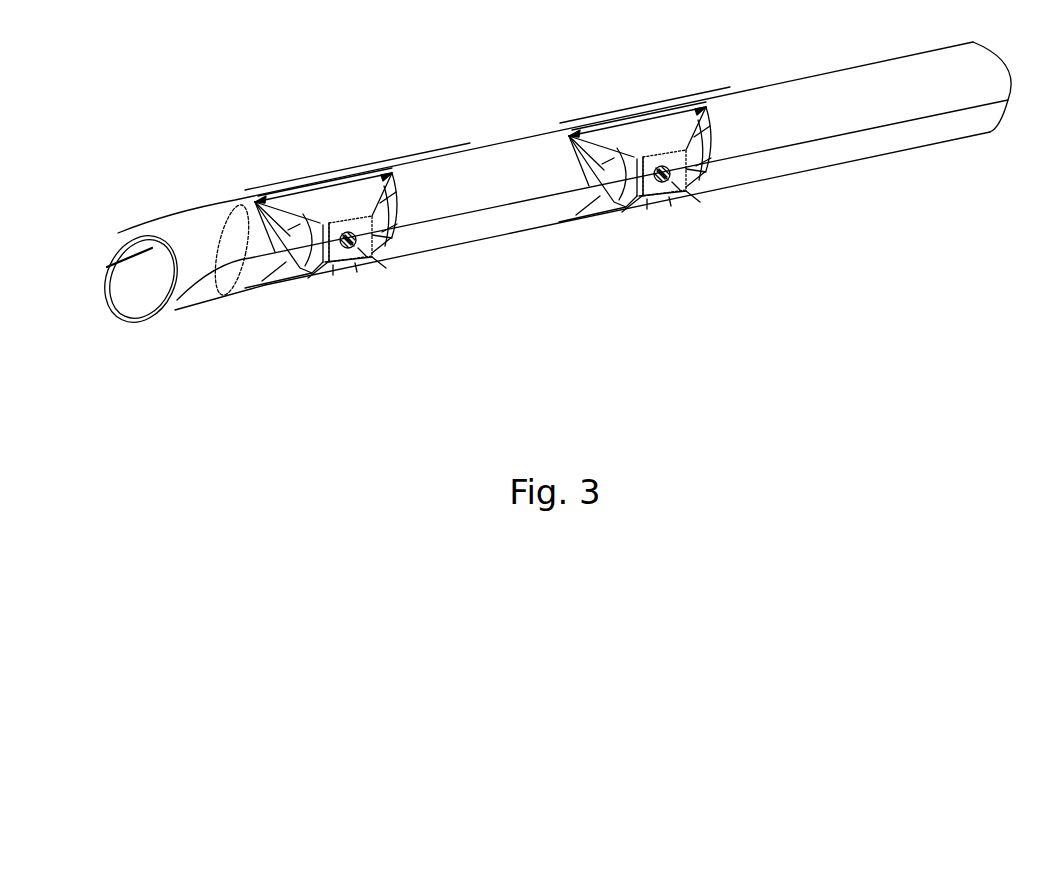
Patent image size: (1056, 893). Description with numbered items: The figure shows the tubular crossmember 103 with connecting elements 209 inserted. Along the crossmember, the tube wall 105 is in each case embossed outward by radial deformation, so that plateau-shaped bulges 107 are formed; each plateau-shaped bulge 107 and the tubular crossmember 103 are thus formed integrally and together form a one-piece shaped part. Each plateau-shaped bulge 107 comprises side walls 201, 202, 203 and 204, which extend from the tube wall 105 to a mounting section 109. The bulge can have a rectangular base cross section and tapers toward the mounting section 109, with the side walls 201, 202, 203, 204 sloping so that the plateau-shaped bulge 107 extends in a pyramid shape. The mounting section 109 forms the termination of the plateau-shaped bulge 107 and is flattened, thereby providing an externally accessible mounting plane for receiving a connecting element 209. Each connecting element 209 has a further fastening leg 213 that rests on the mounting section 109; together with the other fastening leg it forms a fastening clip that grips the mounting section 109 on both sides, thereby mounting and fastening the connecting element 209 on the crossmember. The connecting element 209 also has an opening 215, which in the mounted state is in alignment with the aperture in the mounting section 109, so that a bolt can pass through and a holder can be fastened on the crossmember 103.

The tubular crossmember 103 is at (972, 125).
The tube wall 105 is at (465, 173).
The plateau-shaped bulge 107 is at (252, 300).
The mounting section 109 is at (348, 243).
The side wall 201 is at (297, 200).
The side wall 202 is at (383, 240).
The side wall 203 is at (362, 233).
The side wall 204 is at (310, 240).
The connecting element 209 is at (360, 252).
The further fastening leg 213 is at (345, 215).
The opening 215 is at (331, 262).